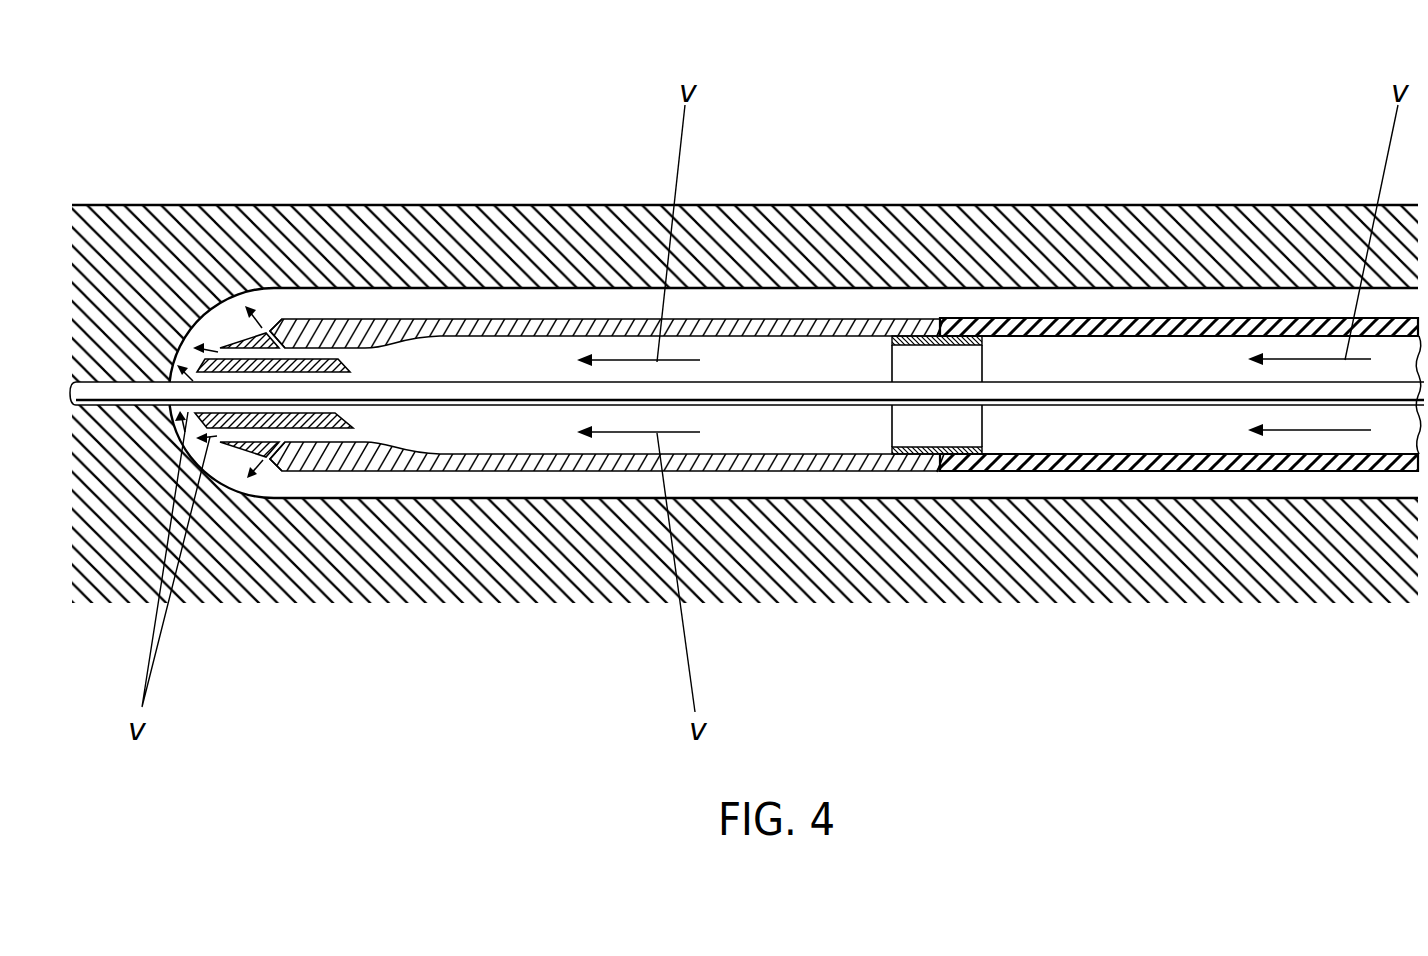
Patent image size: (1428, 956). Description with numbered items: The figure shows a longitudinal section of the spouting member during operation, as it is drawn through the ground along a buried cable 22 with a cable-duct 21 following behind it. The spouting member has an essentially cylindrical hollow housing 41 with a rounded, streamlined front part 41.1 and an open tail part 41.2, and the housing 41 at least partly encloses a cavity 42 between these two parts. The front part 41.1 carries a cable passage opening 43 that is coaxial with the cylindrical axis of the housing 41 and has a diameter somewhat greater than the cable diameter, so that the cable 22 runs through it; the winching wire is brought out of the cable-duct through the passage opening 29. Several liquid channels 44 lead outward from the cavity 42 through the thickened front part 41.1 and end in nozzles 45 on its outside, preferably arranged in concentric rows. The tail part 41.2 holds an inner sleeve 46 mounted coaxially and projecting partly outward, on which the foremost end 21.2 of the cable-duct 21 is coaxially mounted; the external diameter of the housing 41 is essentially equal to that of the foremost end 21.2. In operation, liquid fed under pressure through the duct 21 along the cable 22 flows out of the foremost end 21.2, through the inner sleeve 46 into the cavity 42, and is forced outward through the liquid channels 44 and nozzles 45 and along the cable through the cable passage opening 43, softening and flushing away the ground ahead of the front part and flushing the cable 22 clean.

The cable-duct 21 is at (1172, 322).
The foremost end of the cable-duct 21.2 is at (954, 320).
The cable 22 is at (1200, 407).
The passage opening 29 is at (307, 382).
The housing 41 is at (458, 320).
The front part 41.1 is at (297, 330).
The tail part 41.2 is at (895, 330).
The cavity 42 is at (518, 367).
The cable passage opening 43 is at (367, 423).
The liquid channels 44 is at (327, 353).
The nozzles 45 is at (263, 326).
The inner sleeve 46 is at (965, 323).